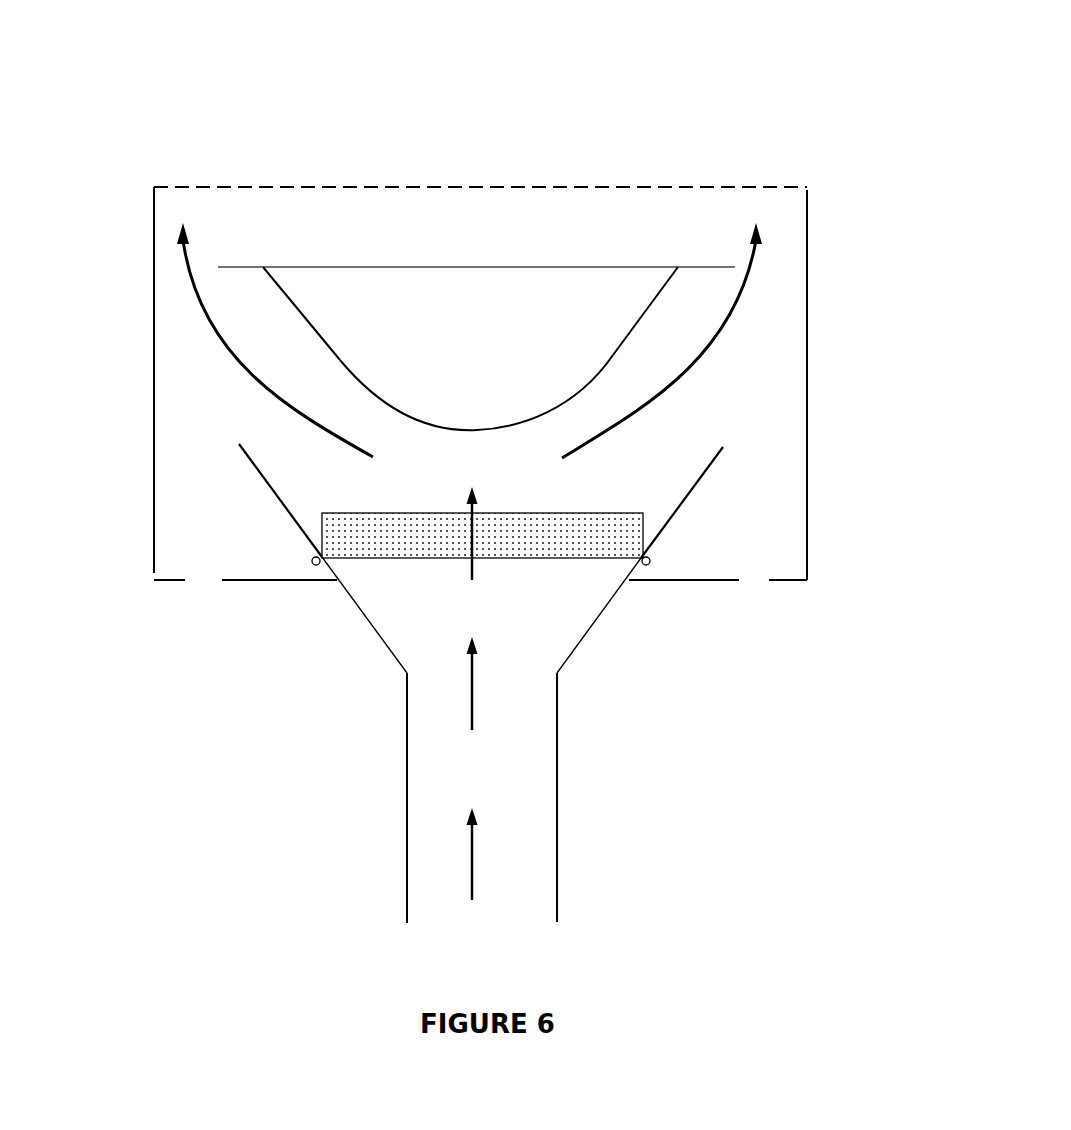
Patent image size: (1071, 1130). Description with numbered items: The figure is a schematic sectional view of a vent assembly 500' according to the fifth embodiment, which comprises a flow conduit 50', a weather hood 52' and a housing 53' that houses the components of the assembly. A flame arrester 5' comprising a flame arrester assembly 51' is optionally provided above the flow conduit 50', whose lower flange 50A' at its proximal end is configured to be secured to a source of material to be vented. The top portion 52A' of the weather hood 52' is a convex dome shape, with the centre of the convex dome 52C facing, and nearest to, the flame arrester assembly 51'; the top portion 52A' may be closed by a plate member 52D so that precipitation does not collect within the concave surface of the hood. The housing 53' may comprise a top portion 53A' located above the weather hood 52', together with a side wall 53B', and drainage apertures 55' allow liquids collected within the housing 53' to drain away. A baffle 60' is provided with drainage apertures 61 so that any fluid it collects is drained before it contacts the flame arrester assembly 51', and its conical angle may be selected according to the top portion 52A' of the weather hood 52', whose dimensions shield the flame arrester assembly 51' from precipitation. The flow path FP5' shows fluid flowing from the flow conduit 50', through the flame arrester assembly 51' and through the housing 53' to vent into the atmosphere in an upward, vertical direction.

The vent assembly 500' is at (778, 290).
The top portion of housing 53A' is at (480, 372).
The housing 53' is at (873, 252).
The housing side wall 53B' is at (864, 450).
The drainage apertures 55' is at (228, 417).
The plate member 52D is at (473, 267).
The weather hood 52' is at (346, 219).
The convex dome 52C is at (475, 428).
The top portion of weather hood 52A' is at (663, 242).
The baffle 60' is at (221, 558).
The drainage apertures 61 is at (652, 560).
The flame arrester assembly 51' is at (594, 480).
The flow conduit 50' is at (252, 798).
The lower flange 50A' is at (738, 797).
The flow path FP5' is at (358, 773).
The flame arrester 5' is at (469, 460).